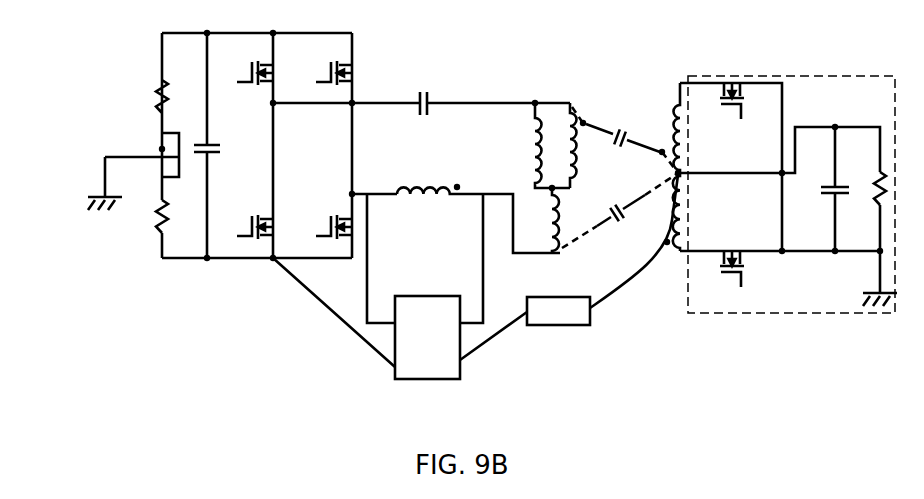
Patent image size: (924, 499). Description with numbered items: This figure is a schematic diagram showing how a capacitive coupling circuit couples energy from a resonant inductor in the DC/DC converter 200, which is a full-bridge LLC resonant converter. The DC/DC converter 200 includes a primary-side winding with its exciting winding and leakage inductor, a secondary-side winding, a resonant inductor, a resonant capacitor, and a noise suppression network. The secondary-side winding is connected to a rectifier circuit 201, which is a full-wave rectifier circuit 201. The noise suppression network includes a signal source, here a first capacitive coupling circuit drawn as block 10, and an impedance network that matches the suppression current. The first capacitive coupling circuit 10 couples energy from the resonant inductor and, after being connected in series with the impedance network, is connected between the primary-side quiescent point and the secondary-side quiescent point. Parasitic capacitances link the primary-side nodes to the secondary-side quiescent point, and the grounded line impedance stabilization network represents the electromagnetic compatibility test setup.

The DC/DC converter 200 is at (76, 41).
The rectifier circuit 201 is at (716, 75).
The impedance network Z2 10 is at (420, 379).